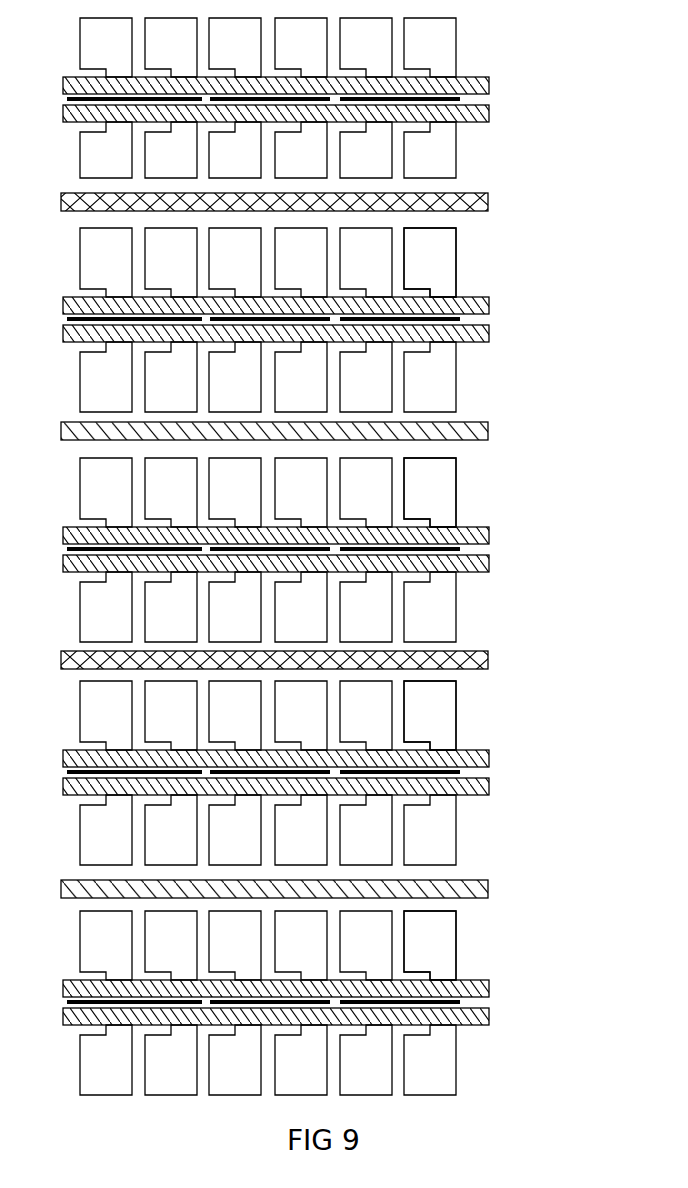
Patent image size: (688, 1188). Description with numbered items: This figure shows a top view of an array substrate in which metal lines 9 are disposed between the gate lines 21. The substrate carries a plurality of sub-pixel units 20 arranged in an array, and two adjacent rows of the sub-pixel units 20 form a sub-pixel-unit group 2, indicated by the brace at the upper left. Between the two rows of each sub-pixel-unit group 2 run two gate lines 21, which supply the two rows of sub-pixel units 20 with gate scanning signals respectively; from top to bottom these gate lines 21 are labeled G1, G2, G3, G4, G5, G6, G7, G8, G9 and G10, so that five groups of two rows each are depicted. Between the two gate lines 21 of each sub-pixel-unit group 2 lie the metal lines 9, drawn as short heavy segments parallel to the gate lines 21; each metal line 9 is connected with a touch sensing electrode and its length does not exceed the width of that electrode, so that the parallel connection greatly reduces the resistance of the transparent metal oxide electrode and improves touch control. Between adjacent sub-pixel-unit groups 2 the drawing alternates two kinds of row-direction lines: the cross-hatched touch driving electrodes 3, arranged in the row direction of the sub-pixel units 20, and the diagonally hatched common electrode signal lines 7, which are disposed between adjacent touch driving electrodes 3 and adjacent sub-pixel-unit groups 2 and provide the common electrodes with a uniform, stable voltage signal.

The sub-pixel-unit group 2 is at (87, 183).
The metal line 9 is at (451, 99).
The gate line 21 is at (482, 122).
The touch driving electrode 3 is at (488, 194).
The sub-pixel unit 20 is at (450, 272).
The common electrode signal line 7 is at (487, 422).
The gate line G1 is at (293, 87).
The gate line G2 is at (293, 112).
The gate line G3 is at (292, 308).
The gate line G4 is at (292, 335).
The gate line G5 is at (292, 537).
The gate line G6 is at (292, 563).
The gate line G7 is at (292, 760).
The gate line G8 is at (292, 787).
The gate line G9 is at (292, 988).
The gate line G10 is at (298, 1017).